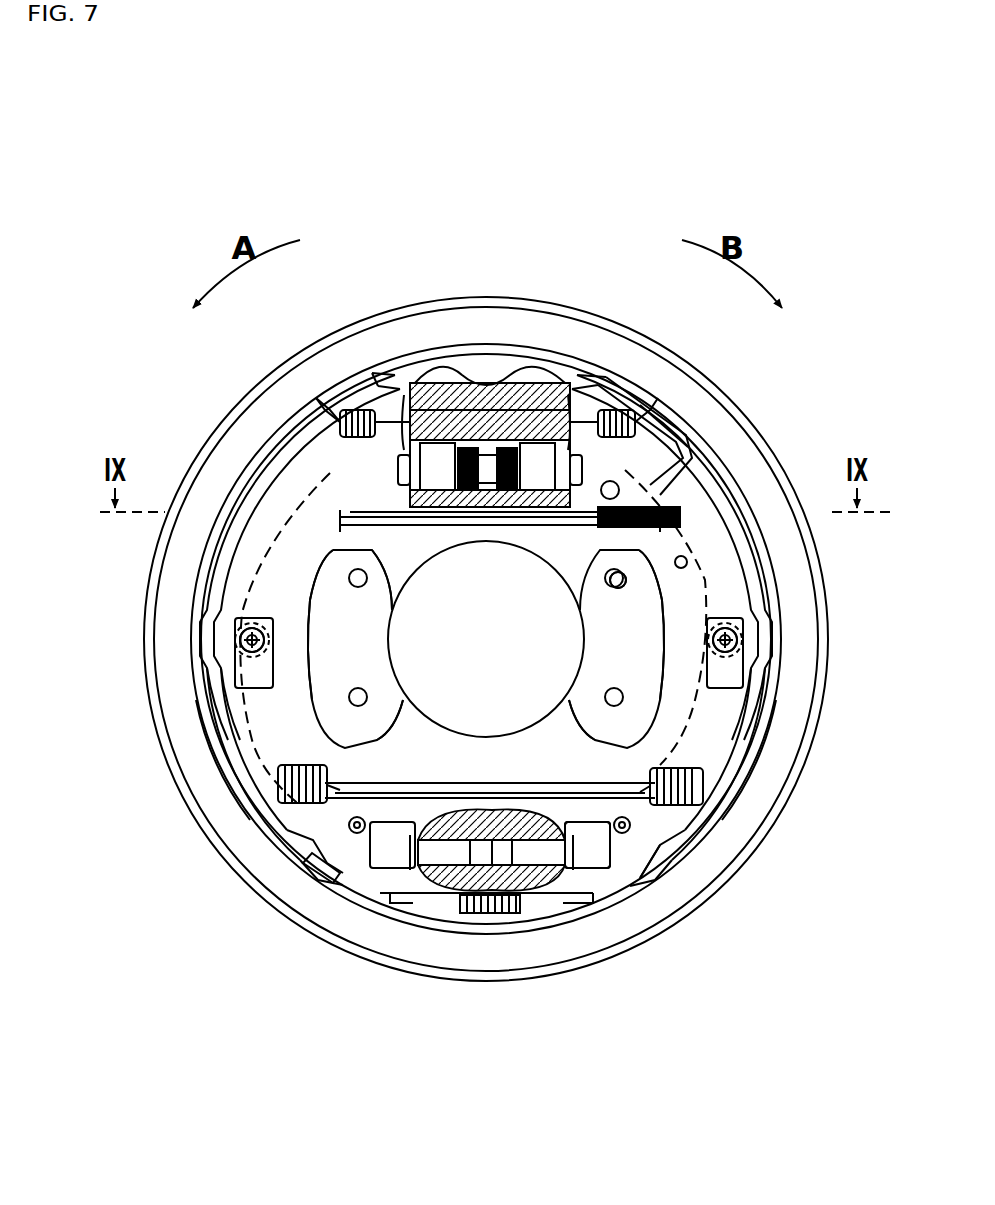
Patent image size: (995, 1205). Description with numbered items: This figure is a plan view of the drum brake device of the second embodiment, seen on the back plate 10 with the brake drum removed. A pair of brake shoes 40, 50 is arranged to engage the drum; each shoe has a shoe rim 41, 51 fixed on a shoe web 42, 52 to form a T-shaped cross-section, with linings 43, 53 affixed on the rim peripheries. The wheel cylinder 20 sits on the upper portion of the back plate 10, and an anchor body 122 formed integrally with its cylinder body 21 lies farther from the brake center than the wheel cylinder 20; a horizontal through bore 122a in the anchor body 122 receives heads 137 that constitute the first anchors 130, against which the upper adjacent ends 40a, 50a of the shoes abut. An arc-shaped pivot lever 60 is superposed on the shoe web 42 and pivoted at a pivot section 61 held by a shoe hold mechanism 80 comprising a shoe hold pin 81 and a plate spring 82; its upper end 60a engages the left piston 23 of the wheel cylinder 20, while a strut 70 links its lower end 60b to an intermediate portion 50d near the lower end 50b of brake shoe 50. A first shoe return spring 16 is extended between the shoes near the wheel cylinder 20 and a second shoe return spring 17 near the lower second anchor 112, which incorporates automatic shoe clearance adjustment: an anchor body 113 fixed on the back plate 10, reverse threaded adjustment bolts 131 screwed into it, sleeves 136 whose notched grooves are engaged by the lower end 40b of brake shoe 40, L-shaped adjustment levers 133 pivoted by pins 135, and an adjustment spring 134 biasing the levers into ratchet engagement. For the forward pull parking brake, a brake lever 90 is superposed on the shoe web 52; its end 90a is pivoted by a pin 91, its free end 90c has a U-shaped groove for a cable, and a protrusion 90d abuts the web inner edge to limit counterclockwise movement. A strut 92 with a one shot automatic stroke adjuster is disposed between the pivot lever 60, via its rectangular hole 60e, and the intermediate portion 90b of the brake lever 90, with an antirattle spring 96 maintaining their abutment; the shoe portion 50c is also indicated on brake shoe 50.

The back plate 10 is at (644, 330).
The first shoe return spring 16 is at (670, 397).
The second shoe return spring 17 is at (728, 835).
The wheel cylinder 20 is at (493, 508).
The cylinder body 21 is at (462, 543).
The piston 23 is at (425, 443).
The brake shoe 40 is at (250, 456).
The upper end of brake shoe 40a is at (388, 398).
The lower end of brake shoe 40b is at (313, 863).
The shoe rim 41 is at (205, 700).
The shoe web 42 is at (240, 750).
The lining 43 is at (243, 800).
The brake shoe 50 is at (757, 510).
The upper end of brake shoe 50a is at (600, 395).
The lower end of brake shoe 50b is at (648, 845).
The second shoe rim portion 50c is at (660, 400).
The intermediate portion of brake shoe 50d is at (657, 840).
The shoe rim 51 is at (745, 783).
The shoe web 52 is at (735, 732).
The lining 53 is at (723, 807).
The pivot lever 60 is at (318, 595).
The upper end of pivot lever 60a is at (387, 473).
The lower end of pivot lever 60b is at (405, 700).
The rectangular hole 60e is at (390, 598).
The pivot section 61 is at (335, 648).
The strut 70 is at (488, 783).
The shoe hold mechanism 80 is at (222, 650).
The shoe hold pin 81 is at (252, 637).
The plate spring 82 is at (240, 678).
The brake lever 90 is at (646, 645).
The end of brake lever 90a is at (650, 430).
The intermediate portion of brake lever 90b is at (618, 588).
The free end of brake lever 90c is at (577, 698).
The protrusion 90d is at (688, 558).
The pin 91 is at (620, 488).
The strut 92 is at (535, 537).
The antirattle spring 96 is at (662, 505).
The second anchor 112 is at (548, 898).
The anchor body 113 is at (485, 900).
The anchor body 122 is at (512, 383).
The horizontal through bore 122a is at (475, 378).
The first anchor 130 is at (400, 362).
The adjustment bolt 131 is at (445, 838).
The adjustment lever 133 is at (385, 895).
The adjustment spring 134 is at (463, 905).
The pin 135 is at (360, 816).
The sleeve 136 is at (400, 830).
The head 137 is at (402, 452).